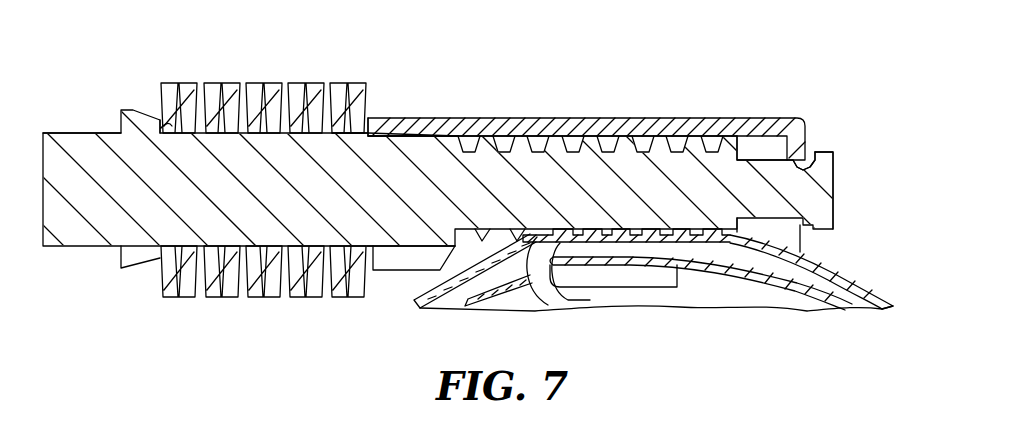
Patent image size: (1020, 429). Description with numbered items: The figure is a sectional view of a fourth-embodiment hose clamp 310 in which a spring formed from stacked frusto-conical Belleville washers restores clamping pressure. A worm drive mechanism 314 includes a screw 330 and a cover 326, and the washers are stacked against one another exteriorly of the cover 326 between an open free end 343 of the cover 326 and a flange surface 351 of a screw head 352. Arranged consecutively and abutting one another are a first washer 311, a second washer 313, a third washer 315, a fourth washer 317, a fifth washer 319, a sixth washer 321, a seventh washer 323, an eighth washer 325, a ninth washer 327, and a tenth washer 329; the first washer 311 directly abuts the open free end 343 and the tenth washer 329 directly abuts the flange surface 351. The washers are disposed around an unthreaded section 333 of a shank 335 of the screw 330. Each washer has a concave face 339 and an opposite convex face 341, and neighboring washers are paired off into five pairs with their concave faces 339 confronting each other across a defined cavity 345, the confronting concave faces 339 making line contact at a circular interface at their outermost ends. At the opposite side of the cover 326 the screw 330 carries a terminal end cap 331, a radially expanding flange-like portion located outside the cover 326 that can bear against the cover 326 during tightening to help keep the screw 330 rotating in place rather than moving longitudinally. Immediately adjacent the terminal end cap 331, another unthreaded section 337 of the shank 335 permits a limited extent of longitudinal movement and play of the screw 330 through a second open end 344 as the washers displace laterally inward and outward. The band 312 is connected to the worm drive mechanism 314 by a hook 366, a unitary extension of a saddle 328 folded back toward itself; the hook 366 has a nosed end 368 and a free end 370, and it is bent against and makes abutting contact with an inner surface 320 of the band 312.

The hose clamp 310 is at (680, 64).
The first washer 311 is at (353, 87).
The band 312 is at (852, 307).
The second washer 313 is at (342, 295).
The worm drive mechanism 314 is at (633, 113).
The third washer 315 is at (312, 87).
The fourth washer 317 is at (295, 294).
The fifth washer 319 is at (267, 87).
The inner surface 320 is at (730, 273).
The sixth washer 321 is at (248, 295).
The seventh washer 323 is at (230, 93).
The eighth washer 325 is at (208, 295).
The cover 326 is at (512, 117).
The ninth washer 327 is at (192, 87).
The saddle 328 is at (786, 264).
The tenth washer 329 is at (172, 294).
The screw 330 is at (88, 249).
The terminal end cap 331 is at (835, 153).
The unthreaded section 333 is at (273, 204).
The shank 335 is at (448, 167).
The unthreaded section 337 is at (757, 160).
The concave face 339 is at (352, 243).
The convex face 341 is at (366, 280).
The open free end 343 is at (365, 127).
The second open end 344 is at (818, 183).
The cavity 345 is at (347, 140).
The flange surface 351 is at (163, 125).
The screw head 352 is at (97, 150).
The hook 366 is at (625, 277).
The nosed end 368 is at (540, 300).
The free end 370 is at (680, 273).